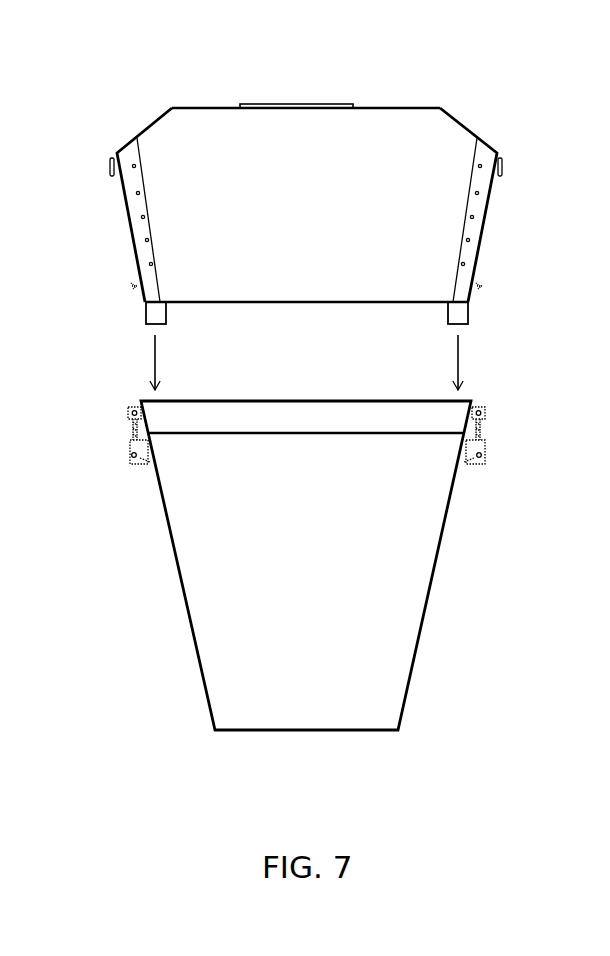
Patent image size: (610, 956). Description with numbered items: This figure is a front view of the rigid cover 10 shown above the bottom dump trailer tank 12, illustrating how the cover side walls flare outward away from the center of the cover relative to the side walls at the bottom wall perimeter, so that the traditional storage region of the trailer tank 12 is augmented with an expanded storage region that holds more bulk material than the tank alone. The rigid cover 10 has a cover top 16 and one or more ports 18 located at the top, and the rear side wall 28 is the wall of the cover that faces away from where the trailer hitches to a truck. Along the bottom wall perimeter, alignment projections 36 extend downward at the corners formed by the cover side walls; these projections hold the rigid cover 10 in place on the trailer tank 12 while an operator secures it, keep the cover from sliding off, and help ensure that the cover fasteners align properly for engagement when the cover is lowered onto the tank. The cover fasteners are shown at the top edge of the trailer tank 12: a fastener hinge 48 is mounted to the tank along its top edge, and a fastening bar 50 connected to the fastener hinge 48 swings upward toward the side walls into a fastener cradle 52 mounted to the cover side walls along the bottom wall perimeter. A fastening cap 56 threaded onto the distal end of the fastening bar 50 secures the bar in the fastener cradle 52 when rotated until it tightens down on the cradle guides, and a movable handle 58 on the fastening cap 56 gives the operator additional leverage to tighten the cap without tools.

The rigid cover 10 is at (181, 55).
The bottom dump trailer tank 12 is at (404, 657).
The cover top 16 is at (140, 138).
The port 18 is at (308, 107).
The rear side wall 28 is at (318, 225).
The alignment projection 36 is at (149, 315).
The fastener hinge 48 is at (142, 410).
The fastening bar 50 is at (137, 427).
The fastener cradle 52 is at (134, 286).
The fastening cap 56 is at (132, 452).
The movable handle 58 is at (147, 462).